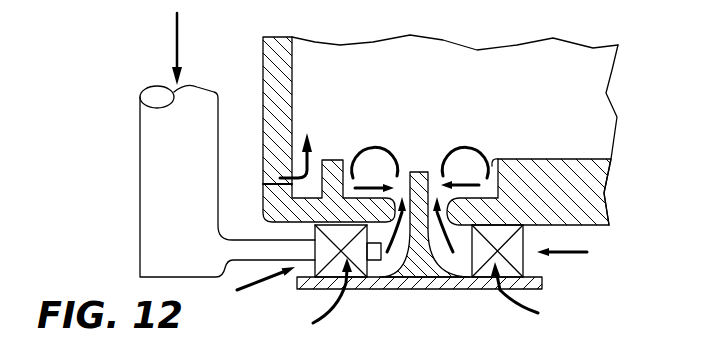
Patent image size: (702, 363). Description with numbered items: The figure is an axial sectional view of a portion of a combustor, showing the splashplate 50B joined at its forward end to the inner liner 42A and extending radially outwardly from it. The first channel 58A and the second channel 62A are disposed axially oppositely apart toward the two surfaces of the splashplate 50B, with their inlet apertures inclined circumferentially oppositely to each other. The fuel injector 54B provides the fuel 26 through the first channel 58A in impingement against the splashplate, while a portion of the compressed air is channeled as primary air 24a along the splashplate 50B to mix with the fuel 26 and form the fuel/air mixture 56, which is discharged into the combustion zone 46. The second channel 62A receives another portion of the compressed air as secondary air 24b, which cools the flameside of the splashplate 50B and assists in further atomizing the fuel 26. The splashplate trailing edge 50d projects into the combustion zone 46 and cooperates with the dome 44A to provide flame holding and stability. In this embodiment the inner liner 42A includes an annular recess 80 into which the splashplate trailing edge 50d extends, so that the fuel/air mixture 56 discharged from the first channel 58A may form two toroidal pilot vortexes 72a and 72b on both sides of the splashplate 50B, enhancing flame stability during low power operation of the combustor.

The fuel 26 is at (177, 22).
The fuel injector 54B is at (140, 167).
The dome 44A is at (263, 118).
The toroidal pilot vortex 72a is at (357, 150).
The fuel/air mixture 56 is at (403, 194).
The combustion zone 46 is at (445, 76).
The splashplate trailing edge 50d is at (422, 172).
The toroidal pilot vortex 72b is at (486, 162).
The annular recess 80 is at (495, 160).
The inner liner 42A is at (547, 159).
The primary air 24a is at (259, 287).
The first channel 58A is at (329, 281).
The splashplate 50B is at (402, 243).
The second channel 62A is at (522, 276).
The secondary air 24b is at (572, 253).